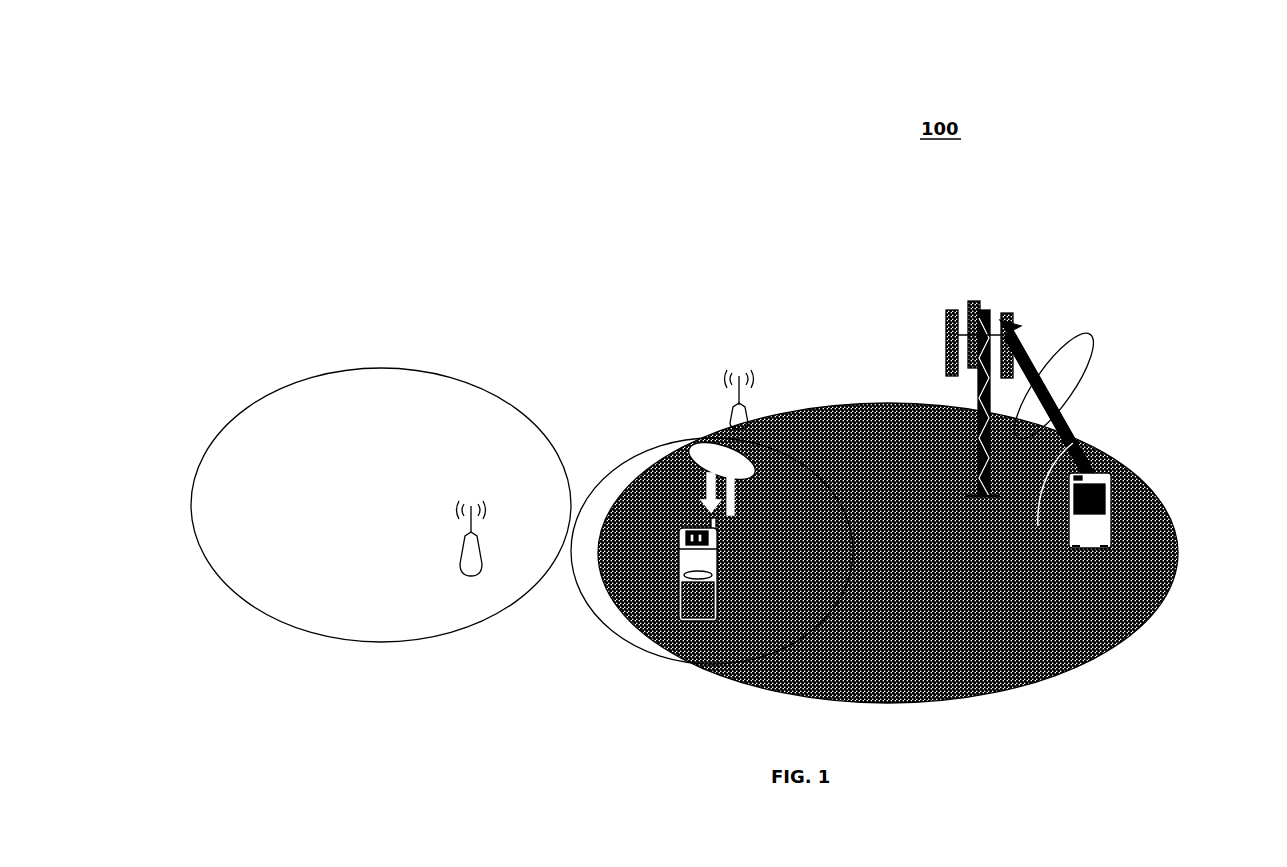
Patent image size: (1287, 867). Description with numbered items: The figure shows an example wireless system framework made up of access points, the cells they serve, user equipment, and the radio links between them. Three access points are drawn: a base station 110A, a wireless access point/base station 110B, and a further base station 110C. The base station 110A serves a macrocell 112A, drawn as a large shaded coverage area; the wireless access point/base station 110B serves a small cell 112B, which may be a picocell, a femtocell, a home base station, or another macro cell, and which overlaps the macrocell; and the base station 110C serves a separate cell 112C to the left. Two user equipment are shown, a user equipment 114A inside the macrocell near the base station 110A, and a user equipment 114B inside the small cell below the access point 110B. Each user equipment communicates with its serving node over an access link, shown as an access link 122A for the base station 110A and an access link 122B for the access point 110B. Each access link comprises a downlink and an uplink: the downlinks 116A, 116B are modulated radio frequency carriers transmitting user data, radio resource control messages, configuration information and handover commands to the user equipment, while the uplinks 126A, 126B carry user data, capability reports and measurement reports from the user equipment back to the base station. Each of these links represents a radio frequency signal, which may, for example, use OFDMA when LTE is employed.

The base station 110A is at (1030, 280).
The wireless access point/base station 110B is at (783, 360).
The base station 110C is at (520, 493).
The macrocell 112A is at (1033, 672).
The small cell 112B is at (588, 607).
The cell 112C is at (417, 362).
The user equipment 114A is at (1098, 500).
The user equipment 114B is at (688, 613).
The downlink 116A is at (1036, 497).
The downlink 116B is at (669, 464).
The access link 122A is at (1082, 330).
The access link 122B is at (693, 457).
The uplink 126A is at (1082, 445).
The uplink 126B is at (724, 504).